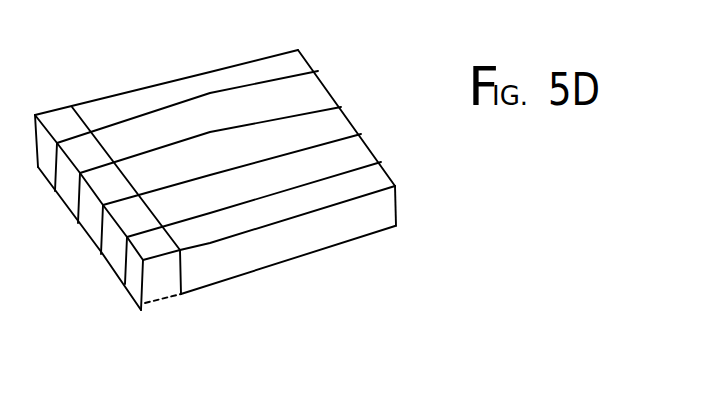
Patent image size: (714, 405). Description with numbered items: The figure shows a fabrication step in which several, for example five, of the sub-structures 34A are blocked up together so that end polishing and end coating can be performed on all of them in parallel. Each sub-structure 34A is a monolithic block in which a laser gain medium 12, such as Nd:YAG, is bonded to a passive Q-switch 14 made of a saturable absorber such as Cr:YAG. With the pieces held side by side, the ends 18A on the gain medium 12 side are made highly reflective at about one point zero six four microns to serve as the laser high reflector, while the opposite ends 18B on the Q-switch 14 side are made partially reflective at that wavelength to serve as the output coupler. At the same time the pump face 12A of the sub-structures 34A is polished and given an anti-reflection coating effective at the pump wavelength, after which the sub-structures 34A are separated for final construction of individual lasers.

The laser gain medium 12 is at (318, 238).
The pump face 12A is at (372, 178).
The passive Q-switch 14 is at (157, 292).
The laser high reflector 18A is at (396, 214).
The output coupler 18B is at (135, 280).
The sub-structures 34A is at (352, 147).